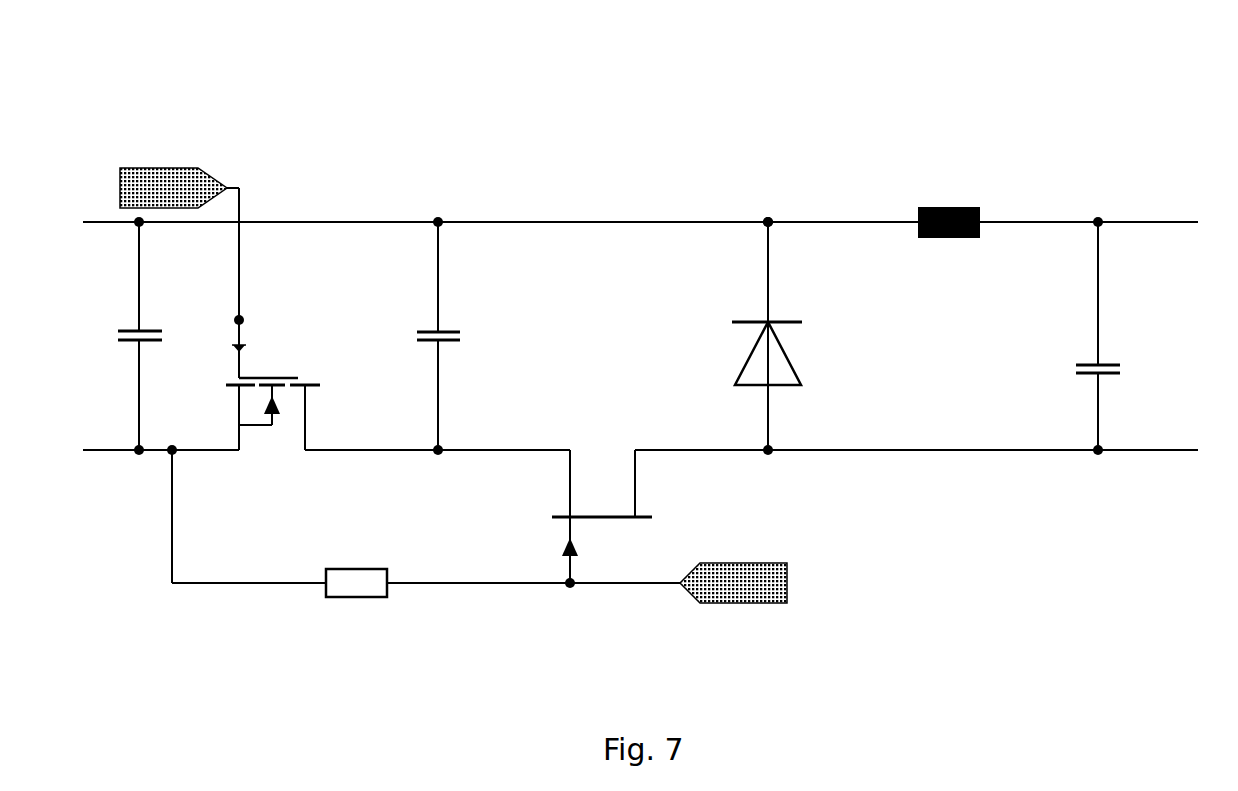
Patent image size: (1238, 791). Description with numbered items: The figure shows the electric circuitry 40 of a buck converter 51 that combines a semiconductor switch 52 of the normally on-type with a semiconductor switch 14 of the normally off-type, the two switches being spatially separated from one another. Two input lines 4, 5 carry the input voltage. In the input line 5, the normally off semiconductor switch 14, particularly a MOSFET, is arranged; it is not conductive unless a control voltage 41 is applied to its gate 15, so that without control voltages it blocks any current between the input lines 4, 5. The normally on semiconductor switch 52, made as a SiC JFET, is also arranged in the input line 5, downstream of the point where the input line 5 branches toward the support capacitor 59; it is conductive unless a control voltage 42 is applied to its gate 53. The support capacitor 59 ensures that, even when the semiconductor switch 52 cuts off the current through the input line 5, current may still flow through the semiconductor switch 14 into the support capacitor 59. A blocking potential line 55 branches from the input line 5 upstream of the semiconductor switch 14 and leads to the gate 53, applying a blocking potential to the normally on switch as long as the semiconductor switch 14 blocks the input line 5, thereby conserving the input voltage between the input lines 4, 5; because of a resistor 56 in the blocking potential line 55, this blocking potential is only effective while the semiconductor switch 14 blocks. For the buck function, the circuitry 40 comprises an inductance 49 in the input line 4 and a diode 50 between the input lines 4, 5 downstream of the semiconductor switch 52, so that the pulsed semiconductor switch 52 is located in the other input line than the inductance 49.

The input line 4 is at (345, 221).
The input line 5 is at (103, 450).
The semiconductor switch 14 is at (266, 469).
The gate 15 is at (240, 335).
The electric circuitry 40 is at (876, 147).
The control voltage 41 is at (180, 168).
The control voltage 42 is at (753, 605).
The inductance 49 is at (960, 177).
The diode 50 is at (810, 346).
The buck converter 51 is at (752, 141).
The semiconductor switch 52 is at (606, 433).
The gate 53 is at (568, 567).
The blocking potential line 55 is at (172, 507).
The resistor 56 is at (357, 597).
The support capacitor 59 is at (462, 320).